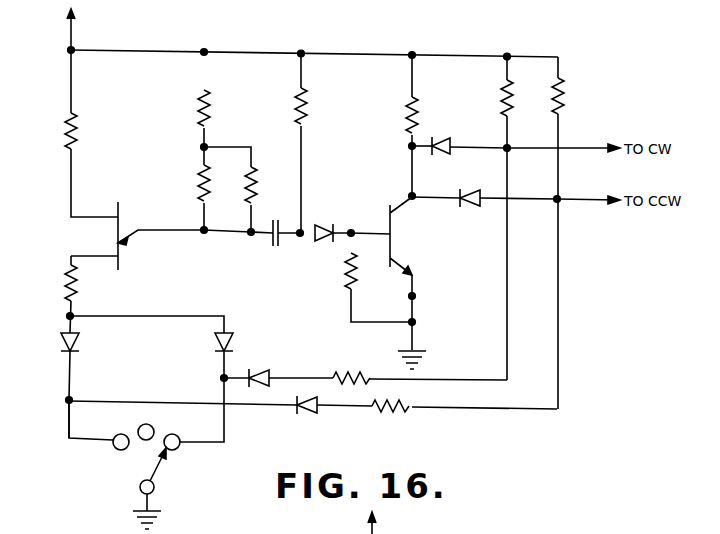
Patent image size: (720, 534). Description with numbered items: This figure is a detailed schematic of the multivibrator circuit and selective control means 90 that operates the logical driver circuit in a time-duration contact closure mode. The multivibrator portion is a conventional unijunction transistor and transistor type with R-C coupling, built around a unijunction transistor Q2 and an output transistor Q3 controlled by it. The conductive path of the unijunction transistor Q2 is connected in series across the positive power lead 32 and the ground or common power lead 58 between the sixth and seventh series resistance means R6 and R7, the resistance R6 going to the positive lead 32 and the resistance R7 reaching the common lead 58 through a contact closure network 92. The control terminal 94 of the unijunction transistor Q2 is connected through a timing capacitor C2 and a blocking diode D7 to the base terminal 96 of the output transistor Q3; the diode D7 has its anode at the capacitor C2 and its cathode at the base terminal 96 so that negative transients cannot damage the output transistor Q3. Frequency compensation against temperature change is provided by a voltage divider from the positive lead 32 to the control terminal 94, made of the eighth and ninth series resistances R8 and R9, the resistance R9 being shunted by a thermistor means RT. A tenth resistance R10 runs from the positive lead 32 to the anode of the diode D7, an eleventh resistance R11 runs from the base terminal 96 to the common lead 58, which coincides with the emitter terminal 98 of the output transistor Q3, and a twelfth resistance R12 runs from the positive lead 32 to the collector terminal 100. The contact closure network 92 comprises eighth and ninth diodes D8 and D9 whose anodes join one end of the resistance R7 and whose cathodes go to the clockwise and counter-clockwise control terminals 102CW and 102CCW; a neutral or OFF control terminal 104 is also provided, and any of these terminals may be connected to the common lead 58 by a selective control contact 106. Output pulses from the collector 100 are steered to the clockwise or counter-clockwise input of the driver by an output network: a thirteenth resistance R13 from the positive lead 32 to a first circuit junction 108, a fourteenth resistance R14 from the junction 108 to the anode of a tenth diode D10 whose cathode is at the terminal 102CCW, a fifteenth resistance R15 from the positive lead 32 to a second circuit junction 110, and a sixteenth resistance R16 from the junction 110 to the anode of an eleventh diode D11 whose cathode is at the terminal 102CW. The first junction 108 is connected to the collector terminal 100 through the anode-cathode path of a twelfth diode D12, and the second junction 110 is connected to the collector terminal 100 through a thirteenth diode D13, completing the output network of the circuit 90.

The positive power lead 32 is at (69, 50).
The multivibrator circuit and selective control means 90 is at (348, 33).
The contact closure network 92 is at (152, 380).
The control terminal 94 is at (204, 230).
The base terminal 96 is at (351, 233).
The emitter terminal 98 is at (413, 296).
The collector terminal 100 is at (412, 196).
The first circuit junction 108 is at (509, 147).
The second circuit junction 110 is at (560, 203).
The clockwise control terminal 102CW is at (117, 449).
The counter-clockwise control terminal 102CCW is at (177, 450).
The neutral or OFF control terminal 104 is at (153, 427).
The selective control contact 106 is at (160, 474).
The ground or common power lead 58 is at (413, 322).
The sixth series resistance means R6 is at (66, 128).
The seventh series resistance means R7 is at (66, 283).
The eighth series resistance R8 is at (199, 100).
The ninth series resistance R9 is at (258, 185).
The thermistor means RT is at (200, 176).
The tenth resistance R10 is at (297, 110).
The eleventh resistance R11 is at (346, 281).
The twelfth resistance R12 is at (406, 104).
The thirteenth resistance R13 is at (503, 92).
The fourteenth resistance R14 is at (370, 376).
The fifteenth resistance R15 is at (565, 96).
The sixteenth resistance R16 is at (395, 414).
The timing capacitor C2 is at (275, 248).
The blocking diode D7 is at (321, 224).
The eighth diode D8 is at (63, 342).
The ninth diode D9 is at (215, 342).
The tenth diode D10 is at (260, 368).
The eleventh diode D11 is at (312, 413).
The twelfth diode D12 is at (446, 138).
The thirteenth diode D13 is at (470, 190).
The unijunction transistor Q2 is at (108, 241).
The output transistor Q3 is at (400, 234).